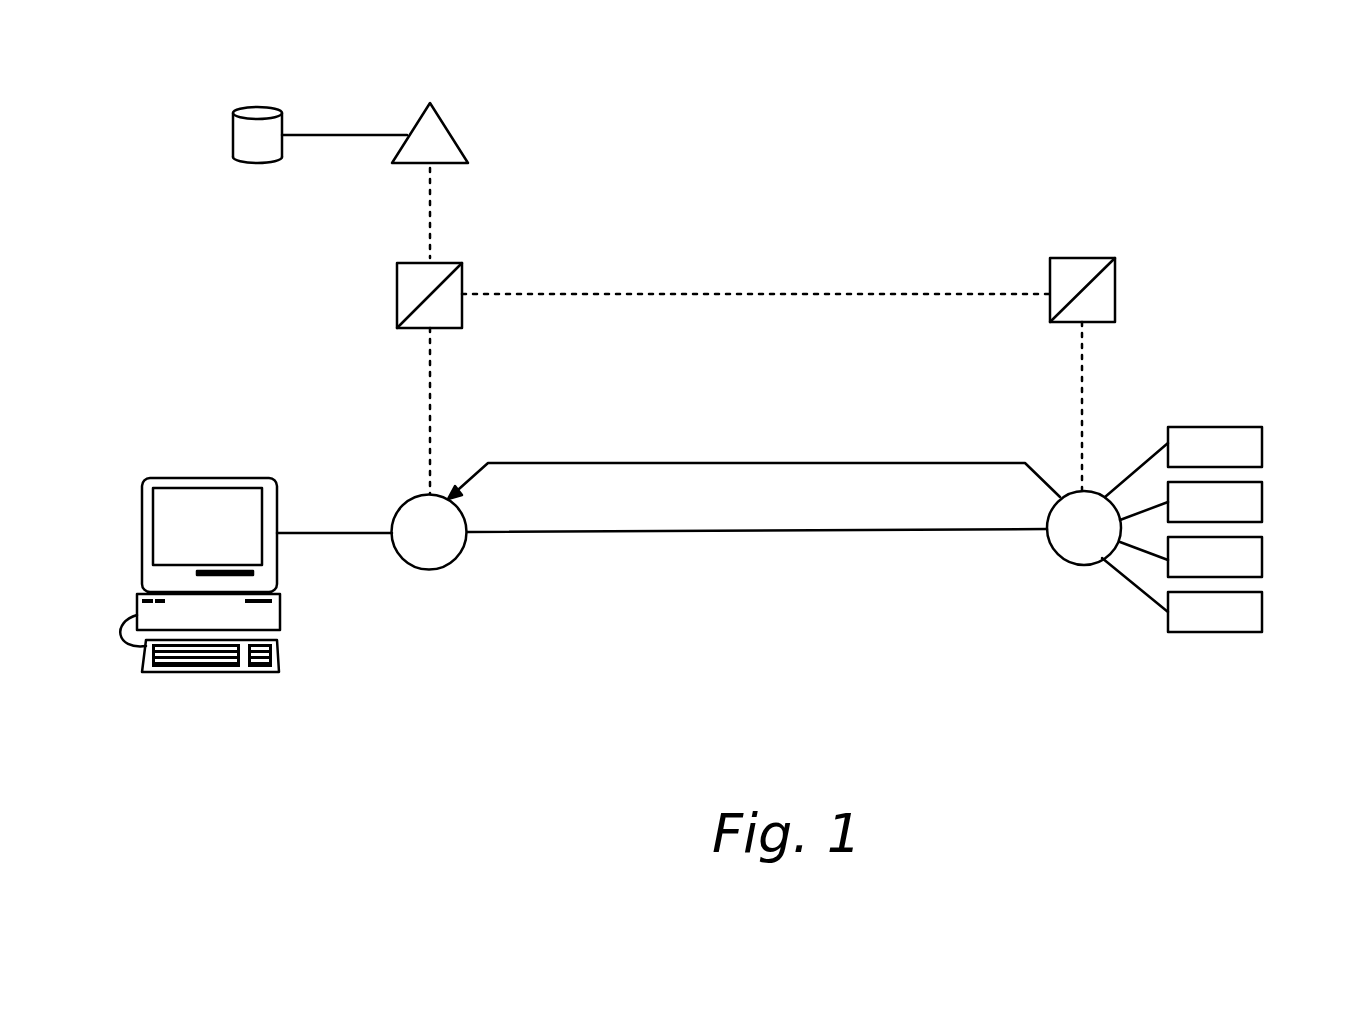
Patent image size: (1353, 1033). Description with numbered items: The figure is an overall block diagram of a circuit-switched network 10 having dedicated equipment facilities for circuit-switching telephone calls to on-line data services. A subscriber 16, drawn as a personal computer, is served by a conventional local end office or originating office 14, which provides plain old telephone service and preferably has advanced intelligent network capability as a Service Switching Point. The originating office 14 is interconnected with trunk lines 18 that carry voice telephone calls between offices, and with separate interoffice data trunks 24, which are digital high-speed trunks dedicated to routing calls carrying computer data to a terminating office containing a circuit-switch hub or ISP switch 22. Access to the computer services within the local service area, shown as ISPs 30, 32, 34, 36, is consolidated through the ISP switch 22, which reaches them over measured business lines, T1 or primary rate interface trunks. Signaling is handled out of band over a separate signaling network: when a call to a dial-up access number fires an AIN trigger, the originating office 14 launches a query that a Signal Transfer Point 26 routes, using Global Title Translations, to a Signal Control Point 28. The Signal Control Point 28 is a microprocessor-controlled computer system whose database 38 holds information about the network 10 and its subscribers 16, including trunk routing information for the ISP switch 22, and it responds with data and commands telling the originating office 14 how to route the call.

The circuit-switched network 10 is at (848, 653).
The originating office 14 is at (450, 562).
The subscriber 16 is at (190, 477).
The trunk lines 18 is at (662, 534).
The circuit-switch hub 22 is at (1060, 562).
The interoffice data trunks 24 is at (720, 462).
The Signal Transfer Point 26 is at (447, 262).
The Signal Control Point 28 is at (442, 118).
The ISP 30 is at (1233, 427).
The ISP 32 is at (1262, 507).
The ISP 34 is at (1262, 555).
The ISP 36 is at (1217, 632).
The database 38 is at (233, 135).